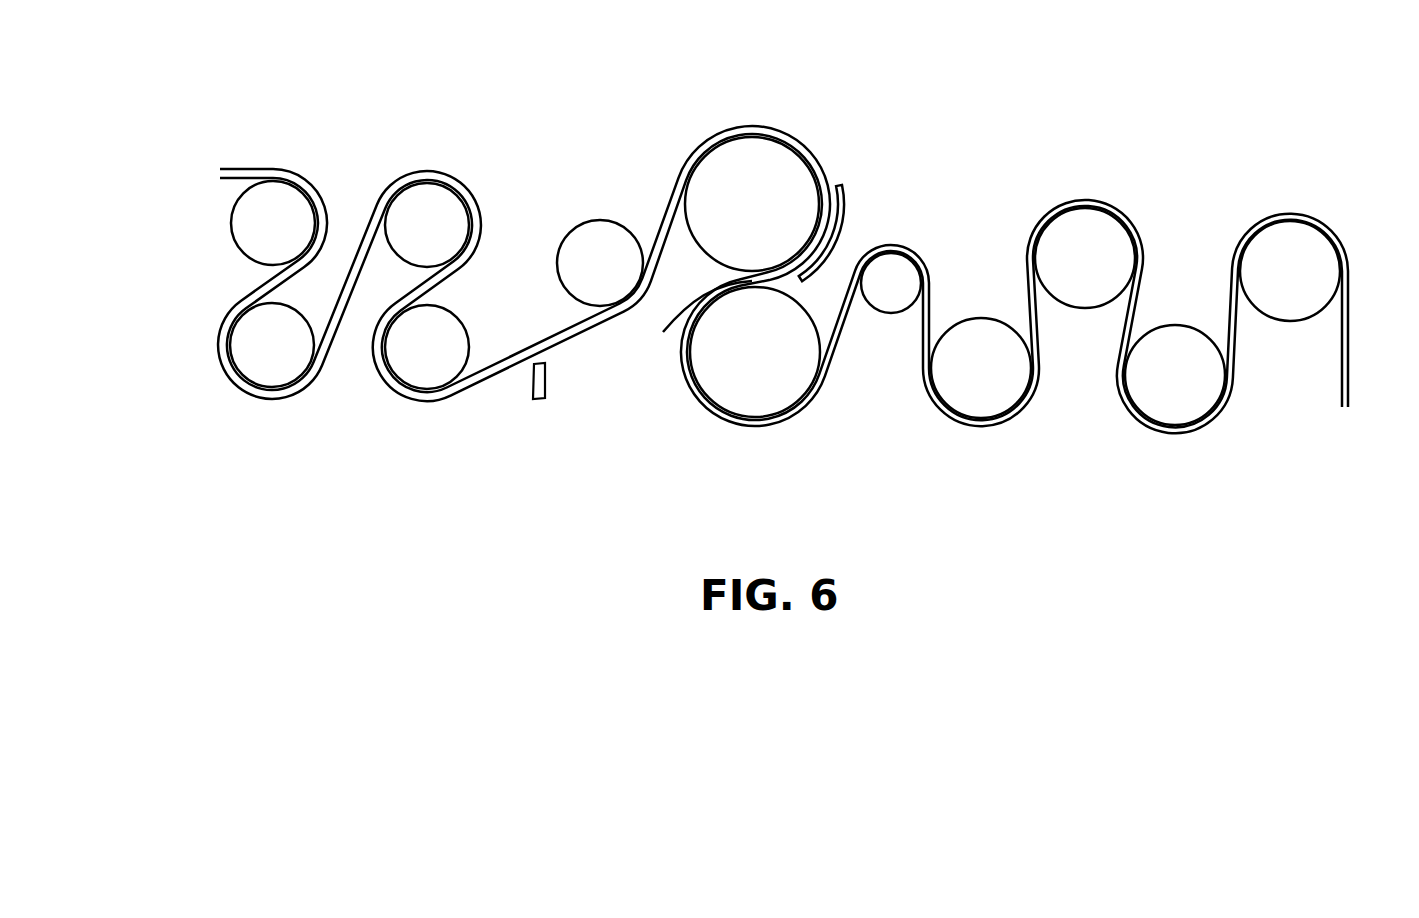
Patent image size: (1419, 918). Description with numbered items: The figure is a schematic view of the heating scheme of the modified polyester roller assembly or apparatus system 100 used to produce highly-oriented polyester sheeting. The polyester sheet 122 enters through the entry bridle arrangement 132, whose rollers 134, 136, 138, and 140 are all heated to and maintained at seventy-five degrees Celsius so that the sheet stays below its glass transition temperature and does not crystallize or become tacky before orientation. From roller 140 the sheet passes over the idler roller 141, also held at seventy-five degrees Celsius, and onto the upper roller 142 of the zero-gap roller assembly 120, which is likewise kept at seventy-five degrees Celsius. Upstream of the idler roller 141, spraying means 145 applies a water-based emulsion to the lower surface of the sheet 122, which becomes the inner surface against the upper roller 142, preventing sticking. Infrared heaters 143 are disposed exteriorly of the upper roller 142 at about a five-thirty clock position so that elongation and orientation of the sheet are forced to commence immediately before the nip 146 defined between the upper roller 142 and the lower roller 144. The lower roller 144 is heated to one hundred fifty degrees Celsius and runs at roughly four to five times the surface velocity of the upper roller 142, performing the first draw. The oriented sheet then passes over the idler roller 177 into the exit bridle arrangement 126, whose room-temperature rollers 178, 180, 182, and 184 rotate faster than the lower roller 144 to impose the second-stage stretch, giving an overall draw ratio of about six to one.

The polyester roller assembly or apparatus system 100 is at (857, 205).
The zero-gap roller assembly 120 is at (812, 143).
The polyester sheet 122 is at (678, 195).
The exit bridle arrangement or system 126 is at (1304, 416).
The entry bridle arrangement or system 132 is at (313, 397).
The entry bridle roller 134 is at (237, 228).
The entry bridle roller 136 is at (245, 370).
The entry bridle roller 138 is at (432, 190).
The entry bridle roller 140 is at (422, 388).
The idler roller 141 is at (576, 290).
The upper roller 142 is at (727, 157).
The infrared heaters 143 is at (837, 237).
The lower roller 144 is at (723, 403).
The spraying means 145 is at (540, 400).
The nip 146 is at (681, 322).
The idler roller 177 is at (895, 300).
The exit bridle roller 178 is at (968, 407).
The exit bridle roller 180 is at (1115, 232).
The exit bridle roller 182 is at (1173, 415).
The exit bridle roller 184 is at (1317, 233).